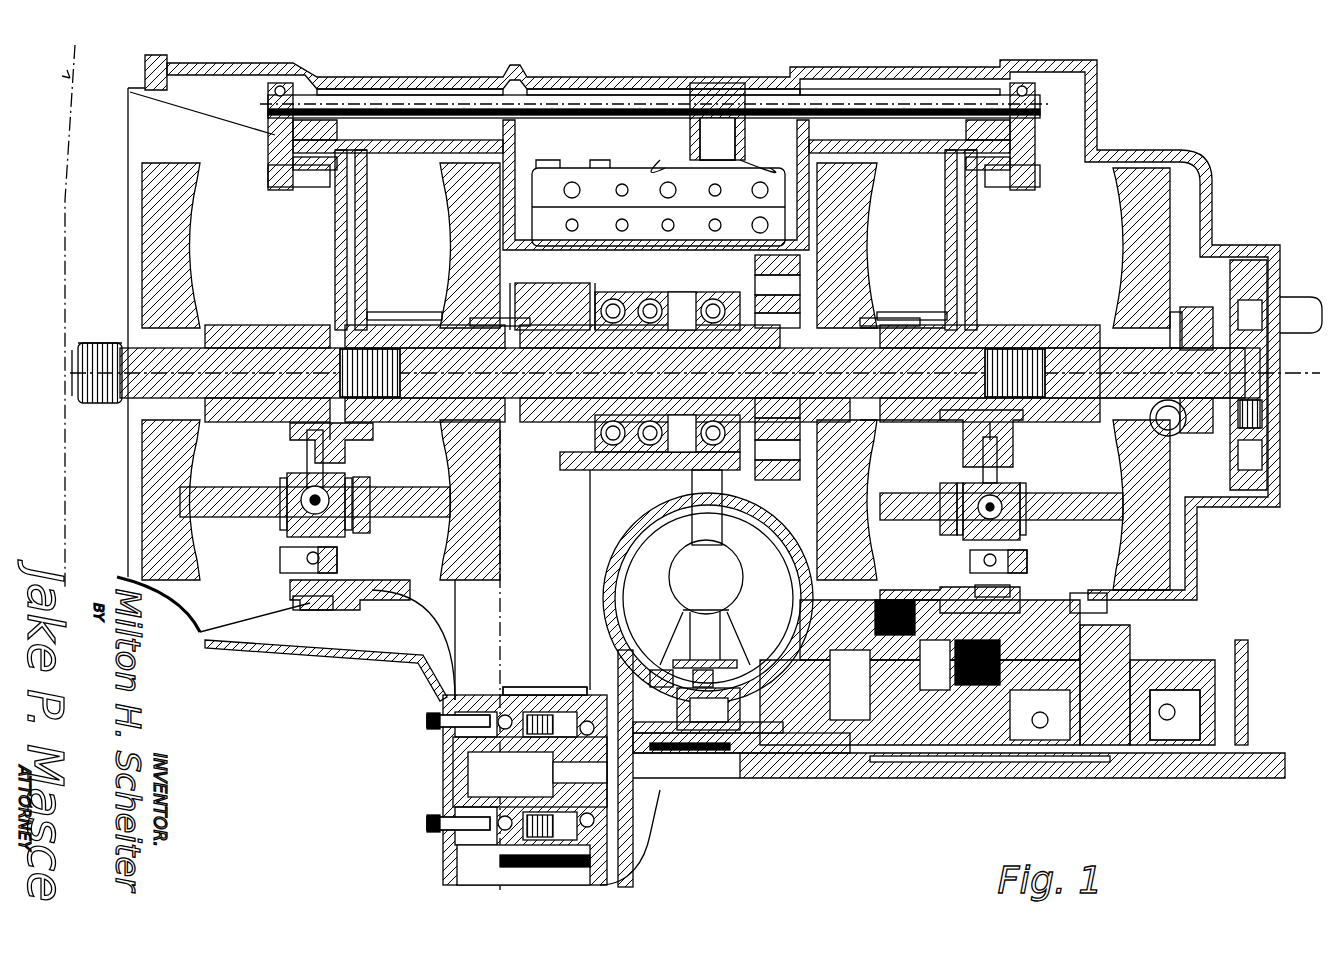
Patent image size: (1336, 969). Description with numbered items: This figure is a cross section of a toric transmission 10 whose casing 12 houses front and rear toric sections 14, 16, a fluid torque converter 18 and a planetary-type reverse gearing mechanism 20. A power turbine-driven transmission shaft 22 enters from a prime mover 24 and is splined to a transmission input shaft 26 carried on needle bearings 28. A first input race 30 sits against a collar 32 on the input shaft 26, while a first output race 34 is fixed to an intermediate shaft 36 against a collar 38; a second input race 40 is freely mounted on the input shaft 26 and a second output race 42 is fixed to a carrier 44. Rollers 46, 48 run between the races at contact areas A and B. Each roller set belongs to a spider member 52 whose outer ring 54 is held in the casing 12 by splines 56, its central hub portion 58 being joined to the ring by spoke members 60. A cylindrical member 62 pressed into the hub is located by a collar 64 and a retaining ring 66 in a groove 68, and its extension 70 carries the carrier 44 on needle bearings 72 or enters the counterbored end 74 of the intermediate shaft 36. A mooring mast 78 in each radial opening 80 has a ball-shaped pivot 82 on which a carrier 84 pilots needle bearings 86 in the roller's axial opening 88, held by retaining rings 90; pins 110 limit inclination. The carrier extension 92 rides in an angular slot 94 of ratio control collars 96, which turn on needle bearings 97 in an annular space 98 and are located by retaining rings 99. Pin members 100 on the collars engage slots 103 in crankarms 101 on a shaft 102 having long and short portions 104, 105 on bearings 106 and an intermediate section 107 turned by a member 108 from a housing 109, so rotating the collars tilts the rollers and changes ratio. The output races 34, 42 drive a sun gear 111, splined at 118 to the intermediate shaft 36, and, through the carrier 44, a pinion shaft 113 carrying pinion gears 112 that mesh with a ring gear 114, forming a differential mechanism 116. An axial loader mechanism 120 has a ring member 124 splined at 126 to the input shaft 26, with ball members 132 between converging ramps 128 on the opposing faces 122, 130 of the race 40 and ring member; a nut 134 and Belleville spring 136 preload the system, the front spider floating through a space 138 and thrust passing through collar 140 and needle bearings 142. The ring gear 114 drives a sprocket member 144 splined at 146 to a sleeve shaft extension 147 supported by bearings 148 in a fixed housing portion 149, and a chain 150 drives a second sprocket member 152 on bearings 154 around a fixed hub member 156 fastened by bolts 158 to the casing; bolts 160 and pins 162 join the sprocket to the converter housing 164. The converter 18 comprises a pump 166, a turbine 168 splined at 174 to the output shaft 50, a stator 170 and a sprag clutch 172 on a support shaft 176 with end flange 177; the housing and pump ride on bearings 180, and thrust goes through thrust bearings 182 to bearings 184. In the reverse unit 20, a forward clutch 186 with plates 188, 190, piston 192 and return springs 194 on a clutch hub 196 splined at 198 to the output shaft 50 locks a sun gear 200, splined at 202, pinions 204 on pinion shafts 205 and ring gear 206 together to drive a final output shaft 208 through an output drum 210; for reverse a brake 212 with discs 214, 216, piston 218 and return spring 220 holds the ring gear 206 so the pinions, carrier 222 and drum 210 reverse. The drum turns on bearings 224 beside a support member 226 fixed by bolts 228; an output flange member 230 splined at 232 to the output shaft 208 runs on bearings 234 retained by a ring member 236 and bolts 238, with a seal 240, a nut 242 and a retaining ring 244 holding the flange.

The transmission 10 is at (70, 78).
The casing 12 is at (225, 65).
The first toric section 14 is at (416, 490).
The second toric section 16 is at (1115, 480).
The fluid torque converter 18 is at (603, 550).
The planetary-type reverse gearing mechanism 20 is at (830, 660).
The power turbine-driven transmission shaft 22 is at (190, 335).
The prime mover 24 is at (65, 180).
The transmission input shaft 26 is at (540, 422).
The needle bearings 28 is at (1060, 328).
The first input race 30 is at (170, 250).
The collar 32 is at (140, 332).
The first output race 34 is at (455, 192).
The intermediate shaft 36 is at (540, 348).
The collar 38 is at (540, 290).
The second input race 40 is at (1140, 245).
The second output race 42 is at (860, 202).
The carrier 44 is at (870, 325).
The roller member 46 is at (172, 485).
The roller member 48 is at (880, 500).
The output shaft 50 is at (820, 780).
The spider member 52 is at (991, 278).
The outer ring 54 is at (960, 592).
The splines 56 is at (1090, 625).
The central hub portion 58 is at (1000, 425).
The spoke members 60 is at (970, 236).
The cylindrical member 62 is at (872, 442).
The collar 64 is at (1000, 328).
The retaining ring 66 is at (988, 440).
The groove 68 is at (1010, 358).
The extension 70 is at (900, 348).
The needle bearings 72 is at (940, 322).
The counterbored end 74 is at (445, 320).
The pin or mooring mast 78 is at (1040, 748).
The radial opening 80 is at (990, 470).
The ball-shaped pivot 82 is at (1020, 520).
The carrier 84 is at (958, 522).
The needle bearings 86 is at (1023, 500).
The axial opening 88 is at (957, 495).
The retaining rings 90 is at (960, 525).
The extension 92 is at (985, 547).
The angular groove or slot 94 is at (1015, 560).
The ratio control collars 96 is at (1022, 570).
The needle bearings 97 is at (1020, 580).
The concentric annular space 98 is at (985, 595).
The retaining rings 99 is at (1010, 600).
The pin members 100 is at (1040, 178).
The crankarms 101 is at (1034, 168).
The shaft 102 is at (640, 96).
The slot 103 is at (1020, 190).
The long portion 104 is at (572, 91).
The short portion 105 is at (880, 95).
The bearings 106 is at (1000, 85).
The intermediate section 107 is at (728, 100).
The member 108 is at (710, 83).
The housing 109 is at (640, 180).
The pins 110 is at (1005, 510).
The sun gear 111 is at (755, 405).
The pinion gears 112 is at (792, 400).
The pinion shaft 113 is at (800, 450).
The ring gear 114 is at (790, 258).
The differential mechanism 116 is at (805, 472).
The spline 118 is at (800, 295).
The axial loader mechanism 120 is at (1232, 257).
The outer face 122 is at (1240, 480).
The ring member 124 is at (1200, 308).
The spline 126 is at (1180, 348).
The converging ramps 128 is at (1200, 398).
The face 130 is at (1170, 318).
The ball members 132 is at (1150, 420).
The nut 134 is at (1290, 332).
The Belleville spring 136 is at (1262, 445).
The space 138 is at (380, 595).
The collar 140 is at (712, 330).
The needle bearings 142 is at (800, 320).
The sprocket member 144 is at (590, 456).
The spline 146 is at (603, 322).
The axial sleeve shaft extension 147 is at (655, 322).
The bearings 148 is at (705, 515).
The fixed housing portion 149 is at (600, 470).
The chain 150 is at (600, 878).
The second sprocket member 152 is at (445, 706).
The bearings 154 is at (500, 730).
The fixed hub member 156 is at (500, 760).
The bolts 158 is at (427, 823).
The bolts 160 is at (595, 670).
The pins 162 is at (600, 862).
The housing 164 is at (605, 640).
The pump 166 is at (760, 560).
The turbine 168 is at (640, 598).
The stator 170 is at (705, 600).
The sprag clutch 172 is at (665, 690).
The spline 174 is at (705, 735).
The stator and sprag clutch support shaft 176 is at (850, 760).
The end flange 177 is at (735, 690).
The bearings 180 is at (780, 740).
The thrust bearings 182 is at (640, 770).
The bearings 184 is at (880, 745).
The clutch 186 is at (1060, 680).
The discs or plates 188 is at (1060, 700).
The discs or plates 190 is at (1075, 640).
The piston 192 is at (1080, 660).
The return springs 194 is at (1050, 725).
The clutch hub 196 is at (975, 745).
The spline 198 is at (990, 745).
The sun gear 200 is at (910, 745).
The spline 202 is at (950, 745).
The pinions 204 is at (895, 745).
The pinion shafts 205 is at (840, 745).
The ring gear 206 is at (870, 700).
The final output shaft 208 is at (1130, 780).
The output drum 210 is at (1010, 745).
The reverse brake 212 is at (800, 560).
The discs 214 is at (780, 600).
The discs 216 is at (812, 625).
The piston 218 is at (805, 585).
The return spring 220 is at (810, 605).
The carrier 222 is at (940, 745).
The bearings 224 is at (1110, 752).
The support member 226 is at (1150, 665).
The bolts 228 is at (1120, 630).
The output flange member 230 is at (1250, 680).
The spline 232 is at (1200, 780).
The bearings 234 is at (1160, 760).
The ring member 236 is at (1200, 690).
The bolts 238 is at (1245, 660).
The seal 240 is at (1200, 715).
The nut 242 is at (1250, 740).
The retaining ring 244 is at (1260, 780).
The area of contact A is at (830, 492).
The area of contact B is at (1160, 515).